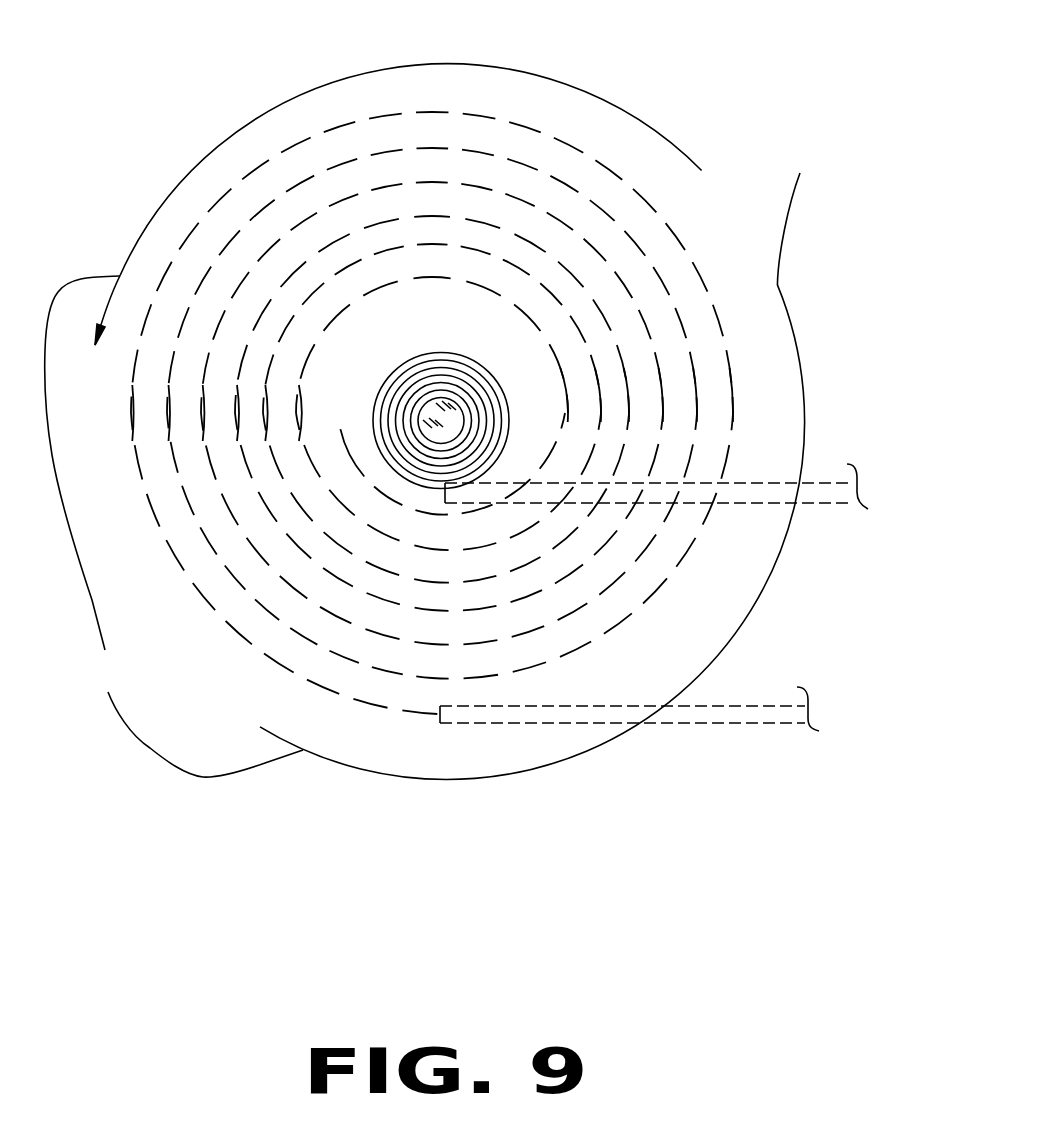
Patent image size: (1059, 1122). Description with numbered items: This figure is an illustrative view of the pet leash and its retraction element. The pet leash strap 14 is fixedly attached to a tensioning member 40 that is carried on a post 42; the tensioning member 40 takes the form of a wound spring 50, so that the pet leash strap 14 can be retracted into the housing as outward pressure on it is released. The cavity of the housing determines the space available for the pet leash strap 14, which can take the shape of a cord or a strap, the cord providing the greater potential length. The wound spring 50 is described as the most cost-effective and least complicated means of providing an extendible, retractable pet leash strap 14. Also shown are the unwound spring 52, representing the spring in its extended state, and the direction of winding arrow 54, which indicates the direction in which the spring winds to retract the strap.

The pet leash strap 14 is at (762, 258).
The tensioning member 40 is at (564, 280).
The wound spring 50 is at (441, 421).
The post 42 is at (443, 410).
The unwound spring 52 is at (432, 410).
The direction of winding arrow 54 is at (174, 526).